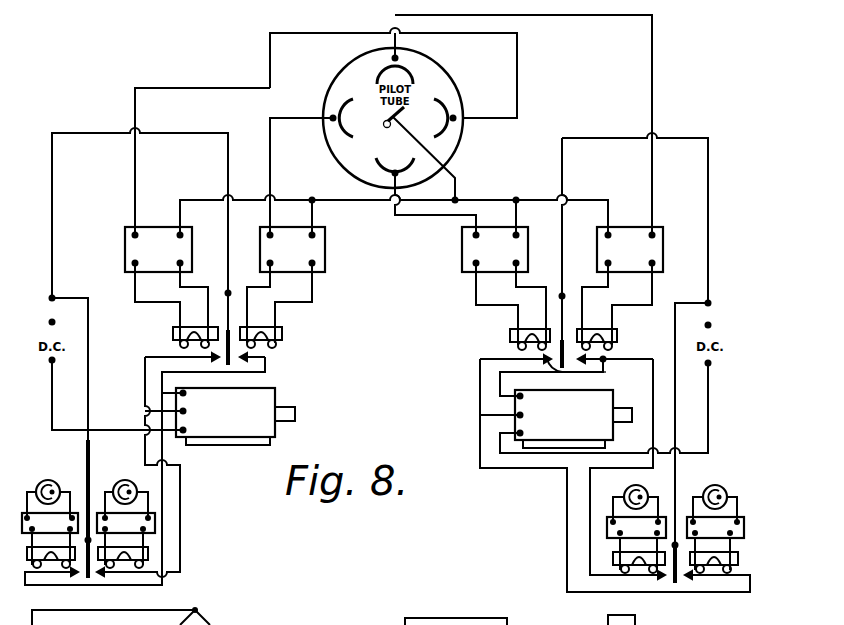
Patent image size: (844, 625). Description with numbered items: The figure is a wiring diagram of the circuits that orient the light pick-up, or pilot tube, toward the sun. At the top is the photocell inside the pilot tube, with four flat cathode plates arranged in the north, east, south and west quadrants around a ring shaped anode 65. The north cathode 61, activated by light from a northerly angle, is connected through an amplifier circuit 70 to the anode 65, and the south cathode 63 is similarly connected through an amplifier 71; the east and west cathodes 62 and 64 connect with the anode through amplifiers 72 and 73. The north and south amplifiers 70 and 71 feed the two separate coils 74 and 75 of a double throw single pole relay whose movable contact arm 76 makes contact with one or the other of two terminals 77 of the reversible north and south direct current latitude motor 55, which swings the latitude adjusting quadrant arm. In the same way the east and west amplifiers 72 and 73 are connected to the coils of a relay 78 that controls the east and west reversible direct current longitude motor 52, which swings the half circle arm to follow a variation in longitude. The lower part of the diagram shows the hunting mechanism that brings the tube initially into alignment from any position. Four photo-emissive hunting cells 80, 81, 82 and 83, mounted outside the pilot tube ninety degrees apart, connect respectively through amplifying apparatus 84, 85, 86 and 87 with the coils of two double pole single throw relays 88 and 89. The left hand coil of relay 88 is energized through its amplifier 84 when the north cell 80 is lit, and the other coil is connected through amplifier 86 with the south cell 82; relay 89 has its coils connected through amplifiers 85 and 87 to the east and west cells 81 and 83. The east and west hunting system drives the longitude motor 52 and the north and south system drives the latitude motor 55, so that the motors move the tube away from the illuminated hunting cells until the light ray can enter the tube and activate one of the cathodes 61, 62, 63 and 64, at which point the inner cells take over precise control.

The longitude motor 52 is at (235, 416).
The latitude motor 55 is at (573, 419).
The north cathode 61 is at (378, 76).
The east cathode 62 is at (440, 104).
The south cathode 63 is at (412, 160).
The west cathode 64 is at (353, 138).
The anode 65 is at (384, 128).
The amplifier circuit 70 is at (663, 245).
The amplifier 71 is at (462, 240).
The amplifier 72 is at (125, 242).
The amplifier 73 is at (325, 245).
The relay coil 74 is at (617, 337).
The relay coil 75 is at (510, 335).
The movable contact arm 76 is at (548, 352).
The terminals 77 is at (604, 373).
The relay 78 is at (250, 353).
The north hunting photocell 80 is at (625, 491).
The east hunting photocell 81 is at (115, 486).
The south hunting photocell 82 is at (727, 491).
The west hunting photocell 83 is at (38, 486).
The amplifying apparatus 84 is at (636, 535).
The amplifying apparatus 85 is at (126, 530).
The amplifier 86 is at (715, 535).
The amplifying apparatus 87 is at (50, 530).
The relay 88 is at (675, 583).
The relay 89 is at (88, 578).